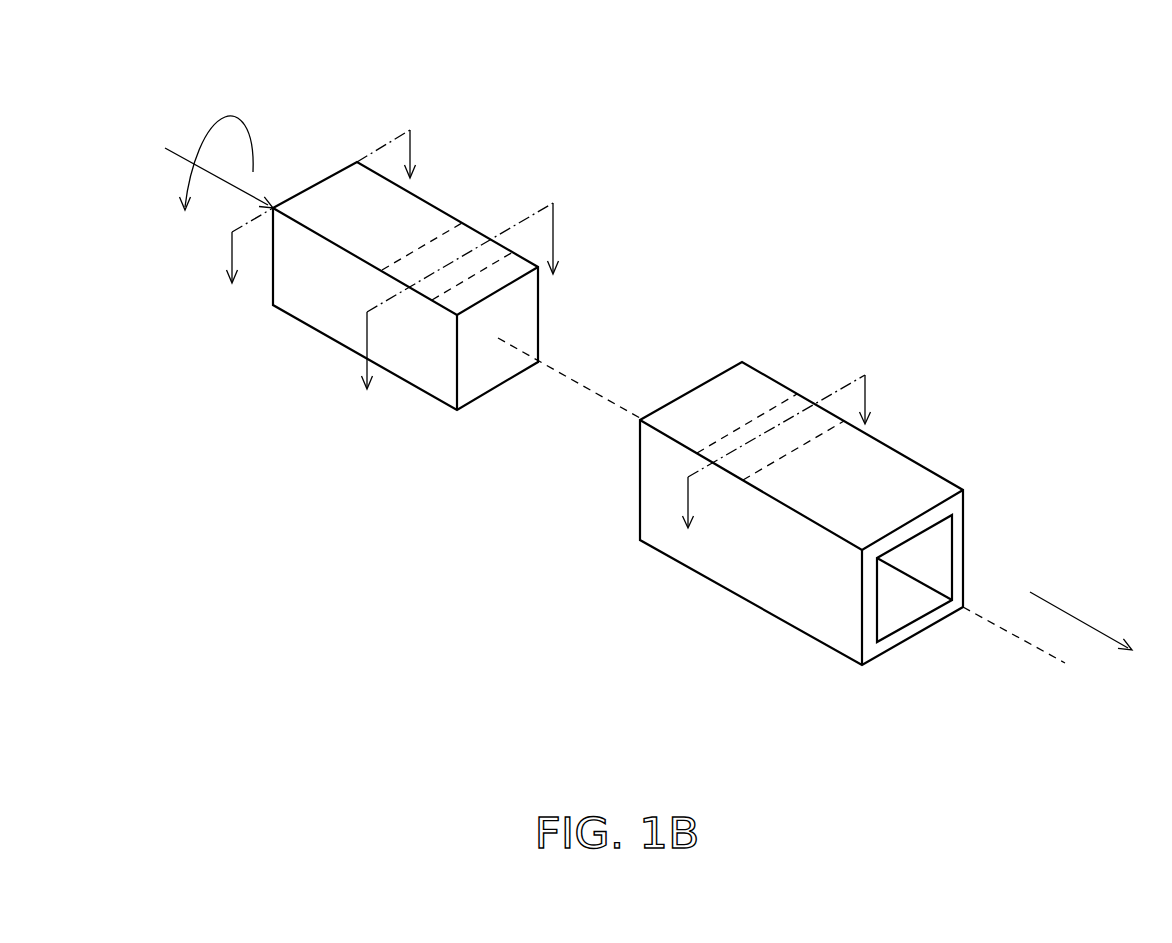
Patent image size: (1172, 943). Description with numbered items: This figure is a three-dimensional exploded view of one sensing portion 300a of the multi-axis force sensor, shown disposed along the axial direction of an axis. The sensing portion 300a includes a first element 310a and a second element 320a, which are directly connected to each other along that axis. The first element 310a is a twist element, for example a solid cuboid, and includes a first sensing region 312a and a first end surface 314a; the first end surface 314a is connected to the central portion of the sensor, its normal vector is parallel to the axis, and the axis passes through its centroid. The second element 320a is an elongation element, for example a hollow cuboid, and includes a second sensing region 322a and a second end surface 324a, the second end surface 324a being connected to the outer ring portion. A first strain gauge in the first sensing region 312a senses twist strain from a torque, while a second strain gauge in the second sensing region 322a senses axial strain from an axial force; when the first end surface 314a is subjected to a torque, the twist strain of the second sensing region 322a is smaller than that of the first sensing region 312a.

The sensing portion 300a is at (653, 405).
The first element 310a is at (400, 218).
The first sensing region 312a is at (447, 188).
The first end surface 314a is at (326, 177).
The second element 320a is at (899, 511).
The second sensing region 322a is at (794, 406).
The second end surface 324a is at (922, 530).